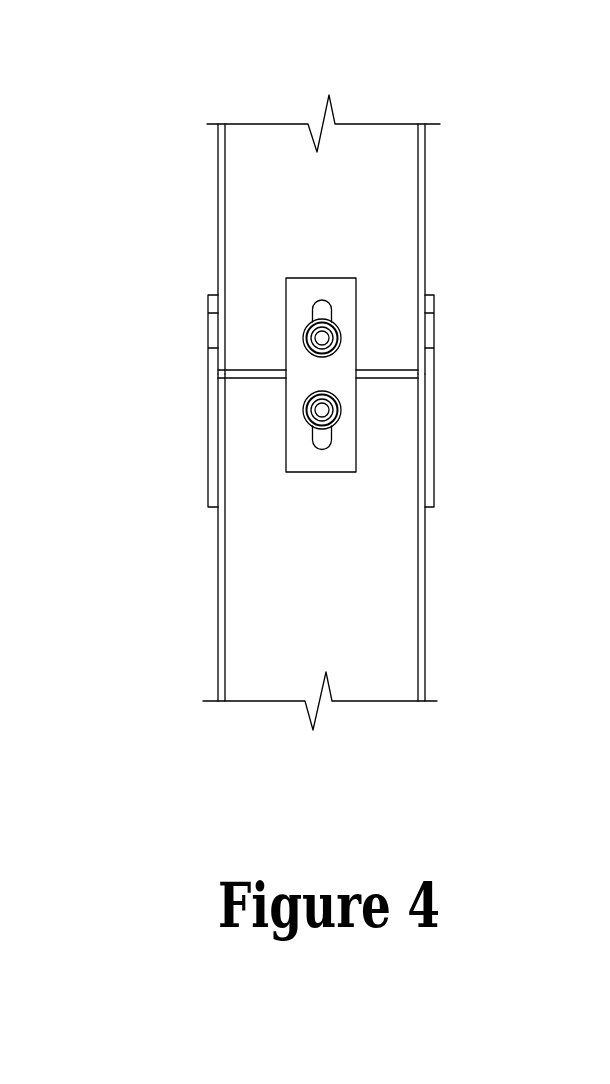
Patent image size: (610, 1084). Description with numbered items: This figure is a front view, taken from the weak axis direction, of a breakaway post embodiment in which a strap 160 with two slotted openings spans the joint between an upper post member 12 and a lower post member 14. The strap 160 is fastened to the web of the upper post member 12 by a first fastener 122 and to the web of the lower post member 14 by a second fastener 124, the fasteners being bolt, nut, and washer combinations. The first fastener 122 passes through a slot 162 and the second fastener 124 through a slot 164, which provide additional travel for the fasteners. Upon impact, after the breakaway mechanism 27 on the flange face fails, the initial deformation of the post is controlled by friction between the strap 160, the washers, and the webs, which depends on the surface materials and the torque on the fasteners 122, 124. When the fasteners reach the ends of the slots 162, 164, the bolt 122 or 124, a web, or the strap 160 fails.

The upper post member 12 is at (425, 205).
The lower post member 14 is at (425, 607).
The breakaway mechanism 27 is at (435, 377).
The first fastener 122 is at (322, 338).
The second fastener 124 is at (322, 410).
The strap 160 is at (325, 474).
The slot 162 is at (312, 306).
The slot 164 is at (310, 441).